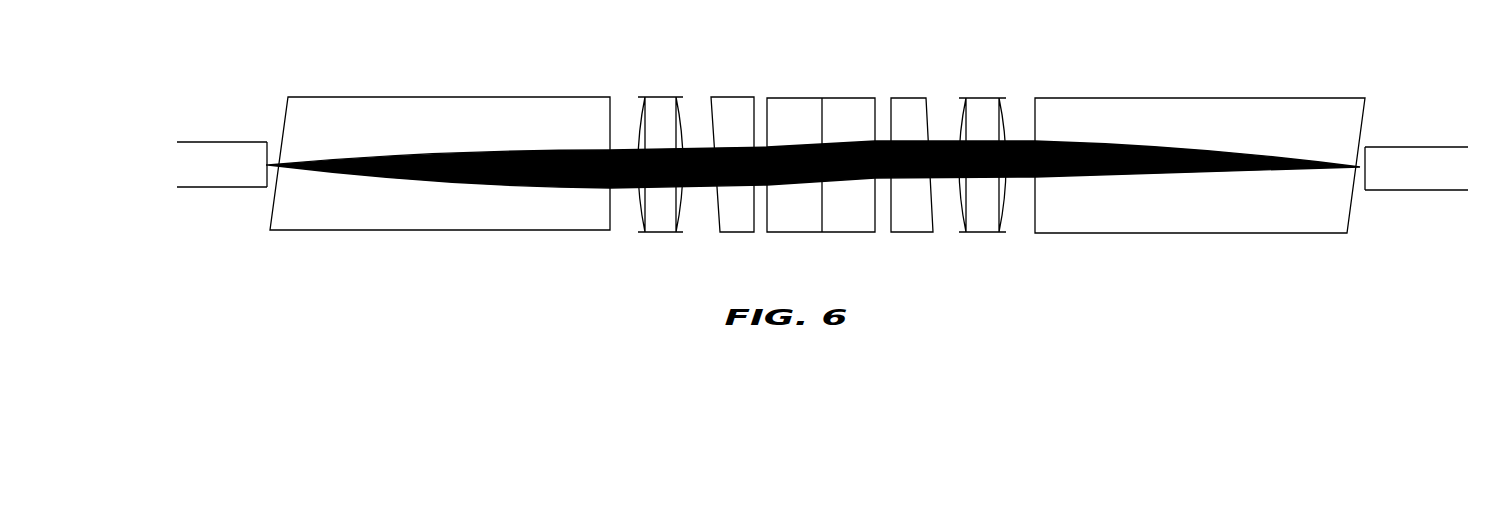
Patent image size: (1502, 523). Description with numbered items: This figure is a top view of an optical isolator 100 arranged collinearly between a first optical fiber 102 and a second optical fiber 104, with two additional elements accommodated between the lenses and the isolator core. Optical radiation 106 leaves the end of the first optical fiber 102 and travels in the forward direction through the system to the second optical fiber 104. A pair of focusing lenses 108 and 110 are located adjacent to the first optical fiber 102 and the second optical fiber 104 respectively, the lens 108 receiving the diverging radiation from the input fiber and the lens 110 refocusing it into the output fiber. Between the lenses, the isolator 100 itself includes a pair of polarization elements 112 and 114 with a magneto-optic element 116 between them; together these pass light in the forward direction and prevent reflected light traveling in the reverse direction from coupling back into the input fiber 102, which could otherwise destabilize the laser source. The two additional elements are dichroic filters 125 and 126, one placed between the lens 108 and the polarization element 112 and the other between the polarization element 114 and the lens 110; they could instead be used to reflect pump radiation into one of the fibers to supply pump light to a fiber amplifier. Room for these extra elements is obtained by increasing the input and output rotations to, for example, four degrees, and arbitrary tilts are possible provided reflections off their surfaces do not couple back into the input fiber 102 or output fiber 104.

The optical isolator 100 is at (845, 211).
The first optical fiber 102 is at (222, 148).
The second optical fiber 104 is at (1416, 154).
The optical radiation 106 is at (266, 189).
The focusing lens 108 is at (436, 96).
The focusing lens 110 is at (1119, 97).
The polarization element 112 is at (732, 149).
The polarization element 114 is at (911, 149).
The magneto-optic element 116 is at (821, 149).
The dichroic filter 125 is at (660, 149).
The dichroic filter 126 is at (982, 149).